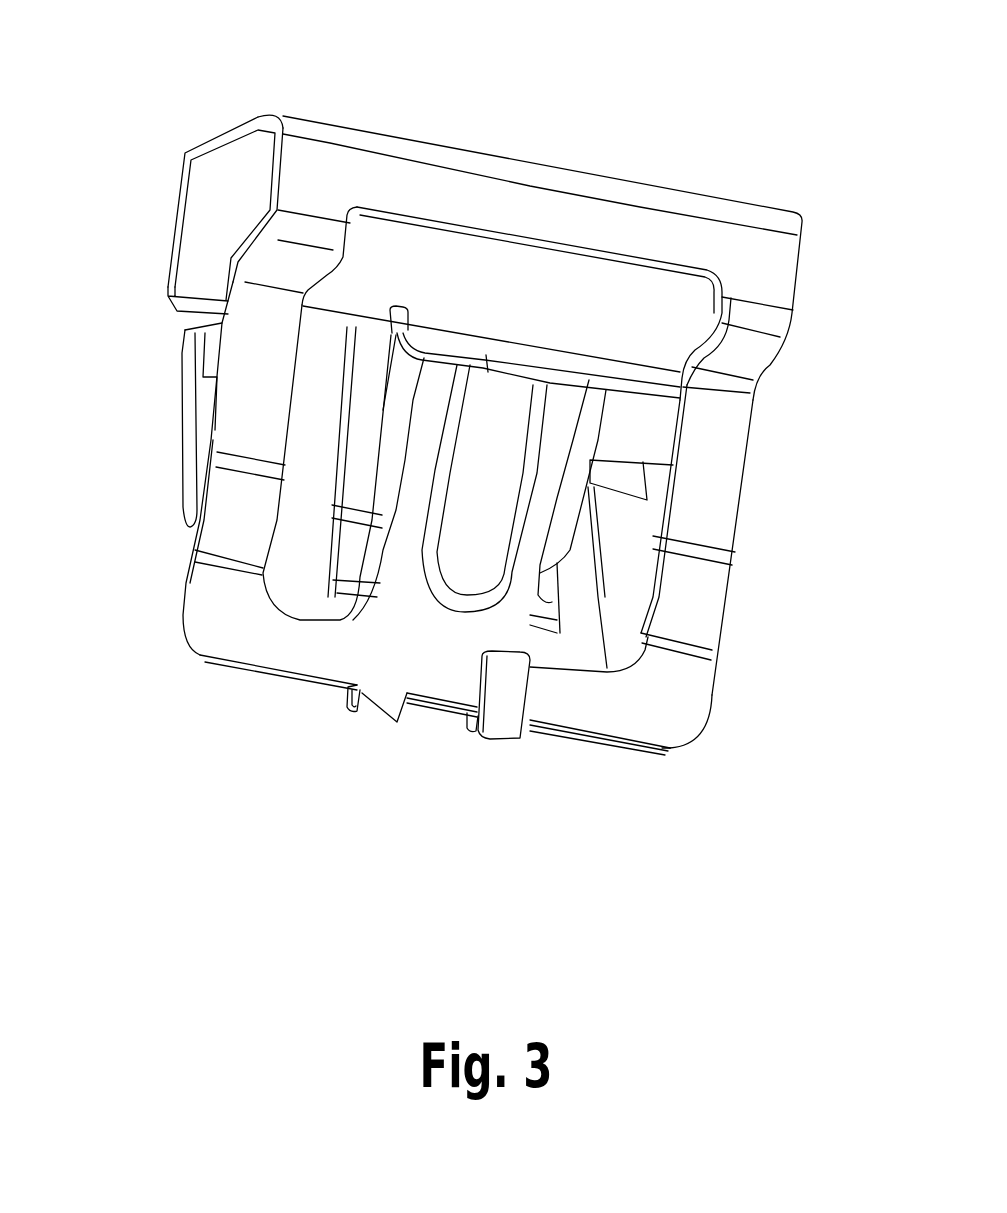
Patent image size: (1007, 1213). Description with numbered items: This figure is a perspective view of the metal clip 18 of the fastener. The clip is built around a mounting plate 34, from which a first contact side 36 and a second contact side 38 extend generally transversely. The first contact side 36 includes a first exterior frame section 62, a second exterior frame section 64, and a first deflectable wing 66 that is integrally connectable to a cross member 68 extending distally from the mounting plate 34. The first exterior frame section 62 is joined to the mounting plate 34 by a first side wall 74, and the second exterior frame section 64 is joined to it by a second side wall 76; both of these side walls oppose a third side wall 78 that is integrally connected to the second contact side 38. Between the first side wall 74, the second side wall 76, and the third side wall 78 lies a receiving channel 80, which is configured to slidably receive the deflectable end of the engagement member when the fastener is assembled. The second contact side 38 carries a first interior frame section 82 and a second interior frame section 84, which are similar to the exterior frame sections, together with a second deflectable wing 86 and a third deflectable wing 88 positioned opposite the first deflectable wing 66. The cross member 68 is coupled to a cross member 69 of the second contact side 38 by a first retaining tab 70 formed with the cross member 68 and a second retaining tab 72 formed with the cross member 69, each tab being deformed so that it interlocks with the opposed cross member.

The metal clip 18 is at (586, 93).
The mounting plate 34 is at (228, 133).
The first contact side 36 is at (712, 707).
The second contact side 38 is at (170, 311).
The first exterior frame section 62 is at (245, 413).
The second exterior frame section 64 is at (728, 462).
The first deflectable wing 66 is at (412, 505).
The cross member 68 is at (580, 700).
The cross member 69 is at (624, 749).
The first retaining tab 70 is at (370, 707).
The second retaining tab 72 is at (510, 688).
The first side wall 74 is at (320, 180).
The second side wall 76 is at (777, 277).
The third side wall 78 is at (197, 230).
The receiving channel 80 is at (224, 196).
The first interior frame section 82 is at (347, 465).
The second interior frame section 84 is at (670, 750).
The second deflectable wing 86 is at (195, 364).
The third deflectable wing 88 is at (640, 527).